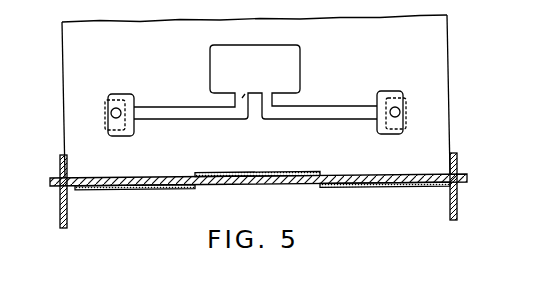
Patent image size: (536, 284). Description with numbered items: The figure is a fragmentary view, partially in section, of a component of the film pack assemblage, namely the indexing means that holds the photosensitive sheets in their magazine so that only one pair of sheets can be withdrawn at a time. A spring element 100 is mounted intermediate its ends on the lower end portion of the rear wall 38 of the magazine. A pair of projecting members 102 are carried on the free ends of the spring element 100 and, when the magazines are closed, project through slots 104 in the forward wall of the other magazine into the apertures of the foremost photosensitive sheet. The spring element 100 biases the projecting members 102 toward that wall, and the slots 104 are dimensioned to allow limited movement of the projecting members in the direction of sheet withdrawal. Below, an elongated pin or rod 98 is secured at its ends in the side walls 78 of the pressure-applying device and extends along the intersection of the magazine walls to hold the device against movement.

The rear wall 38 is at (240, 146).
The side walls 78 is at (67, 215).
The pin or rod 98 is at (380, 175).
The spring element 100 is at (335, 106).
The projecting members 102 is at (116, 107).
The slots 104 is at (104, 117).